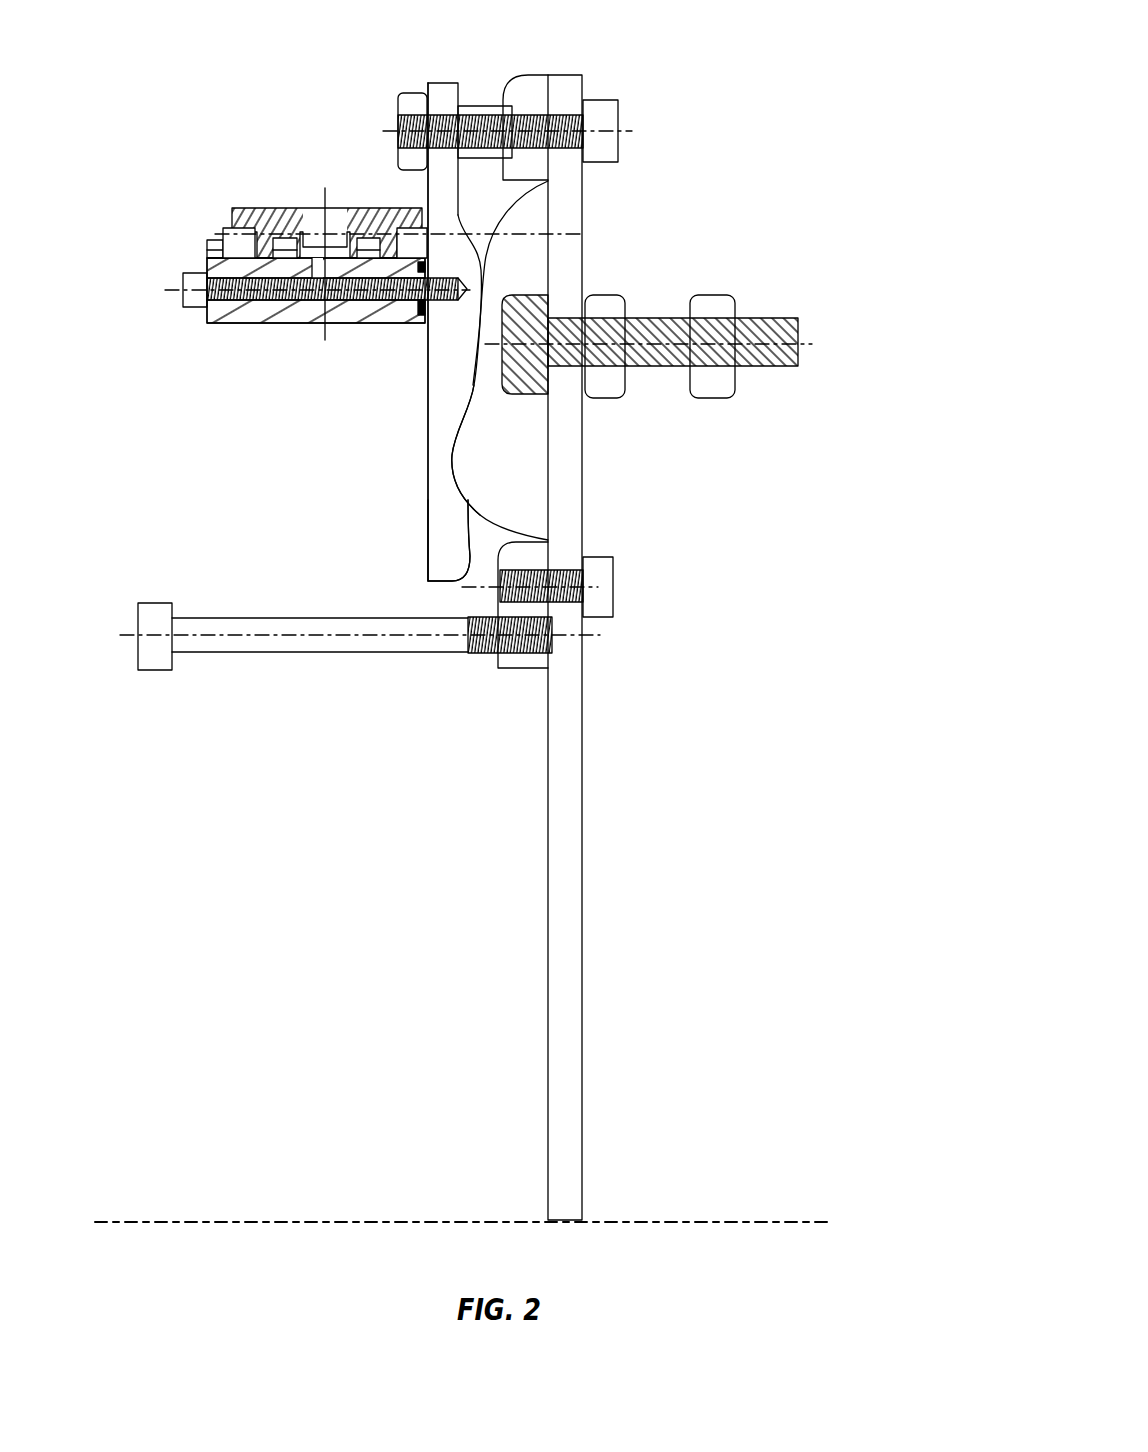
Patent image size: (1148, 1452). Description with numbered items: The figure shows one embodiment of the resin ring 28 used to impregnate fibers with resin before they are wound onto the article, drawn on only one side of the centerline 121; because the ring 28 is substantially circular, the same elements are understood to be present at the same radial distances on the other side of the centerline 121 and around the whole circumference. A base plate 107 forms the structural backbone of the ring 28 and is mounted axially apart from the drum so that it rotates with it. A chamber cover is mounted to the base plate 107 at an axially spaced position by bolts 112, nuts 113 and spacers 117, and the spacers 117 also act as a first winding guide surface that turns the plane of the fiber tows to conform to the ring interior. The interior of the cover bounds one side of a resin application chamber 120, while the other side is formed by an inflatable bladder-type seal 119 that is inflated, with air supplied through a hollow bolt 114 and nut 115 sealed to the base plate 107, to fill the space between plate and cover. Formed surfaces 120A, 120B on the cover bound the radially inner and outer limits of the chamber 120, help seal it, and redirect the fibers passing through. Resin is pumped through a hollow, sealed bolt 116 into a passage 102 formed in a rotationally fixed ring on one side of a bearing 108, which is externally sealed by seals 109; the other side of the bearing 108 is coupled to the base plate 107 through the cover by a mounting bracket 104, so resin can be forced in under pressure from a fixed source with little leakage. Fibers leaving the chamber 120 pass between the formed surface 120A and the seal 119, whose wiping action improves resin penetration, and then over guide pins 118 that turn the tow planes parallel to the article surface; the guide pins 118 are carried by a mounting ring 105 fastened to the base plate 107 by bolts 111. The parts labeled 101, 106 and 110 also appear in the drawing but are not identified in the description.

The resin ring 28 is at (240, 803).
The clamp block 101 is at (280, 323).
The passage 102 is at (300, 208).
The mounting bracket 104 is at (205, 258).
The mounting ring 105 is at (517, 668).
The upper bracket 106 is at (530, 75).
The base plate 107 is at (583, 485).
The bearing 108 is at (350, 208).
The seals 109 is at (222, 230).
The pads 110 is at (418, 323).
The bolts 111 is at (615, 580).
The bolts 112 is at (625, 130).
The nuts 113 is at (442, 82).
The hollow bolt 114 is at (800, 343).
The nut 115 is at (660, 346).
The hollow sealed bolt 116 is at (183, 286).
The spacers 117 is at (498, 106).
The guide pins 118 is at (263, 654).
The inflatable bladder-type seal 119 is at (458, 485).
The resin application chamber 120 is at (470, 318).
The formed surface 120A is at (458, 483).
The formed surface 120B is at (440, 220).
The centerline 121 is at (683, 1222).